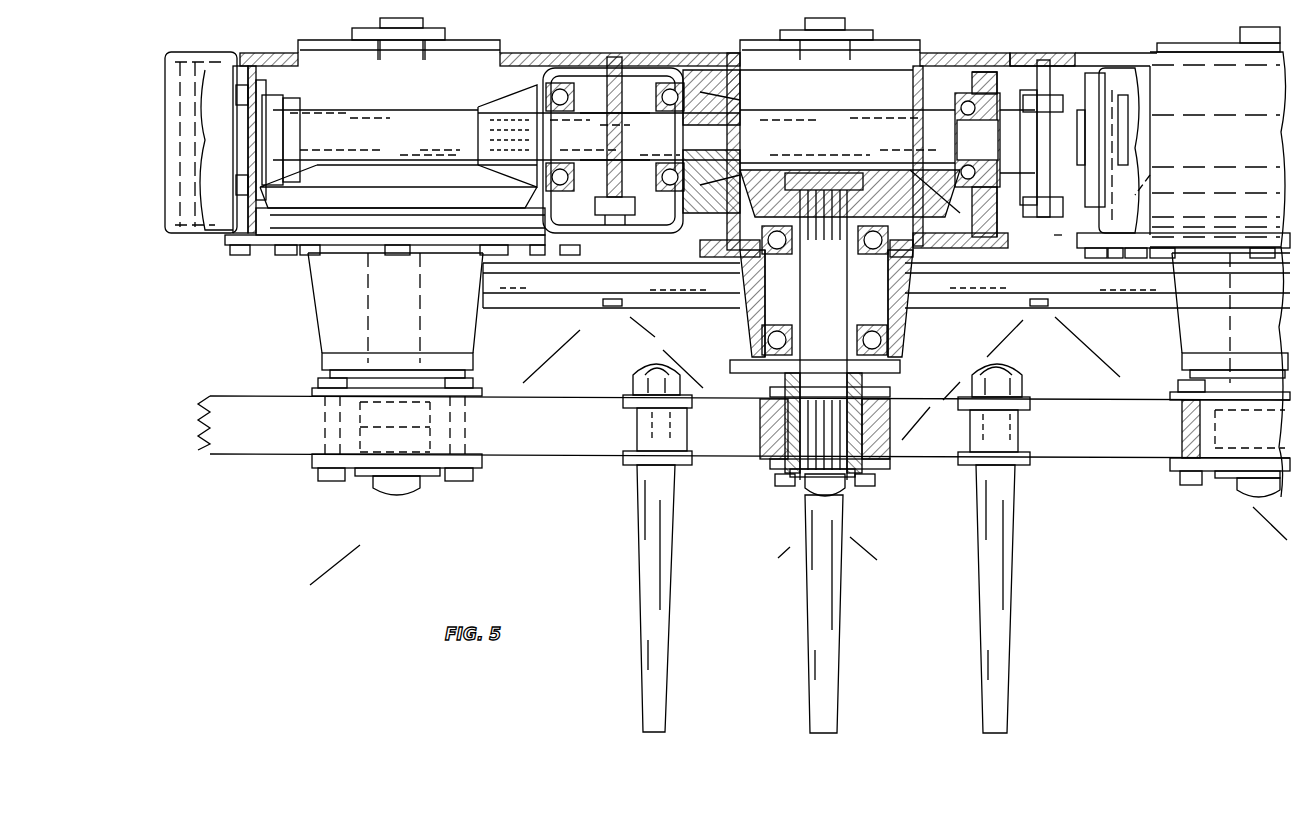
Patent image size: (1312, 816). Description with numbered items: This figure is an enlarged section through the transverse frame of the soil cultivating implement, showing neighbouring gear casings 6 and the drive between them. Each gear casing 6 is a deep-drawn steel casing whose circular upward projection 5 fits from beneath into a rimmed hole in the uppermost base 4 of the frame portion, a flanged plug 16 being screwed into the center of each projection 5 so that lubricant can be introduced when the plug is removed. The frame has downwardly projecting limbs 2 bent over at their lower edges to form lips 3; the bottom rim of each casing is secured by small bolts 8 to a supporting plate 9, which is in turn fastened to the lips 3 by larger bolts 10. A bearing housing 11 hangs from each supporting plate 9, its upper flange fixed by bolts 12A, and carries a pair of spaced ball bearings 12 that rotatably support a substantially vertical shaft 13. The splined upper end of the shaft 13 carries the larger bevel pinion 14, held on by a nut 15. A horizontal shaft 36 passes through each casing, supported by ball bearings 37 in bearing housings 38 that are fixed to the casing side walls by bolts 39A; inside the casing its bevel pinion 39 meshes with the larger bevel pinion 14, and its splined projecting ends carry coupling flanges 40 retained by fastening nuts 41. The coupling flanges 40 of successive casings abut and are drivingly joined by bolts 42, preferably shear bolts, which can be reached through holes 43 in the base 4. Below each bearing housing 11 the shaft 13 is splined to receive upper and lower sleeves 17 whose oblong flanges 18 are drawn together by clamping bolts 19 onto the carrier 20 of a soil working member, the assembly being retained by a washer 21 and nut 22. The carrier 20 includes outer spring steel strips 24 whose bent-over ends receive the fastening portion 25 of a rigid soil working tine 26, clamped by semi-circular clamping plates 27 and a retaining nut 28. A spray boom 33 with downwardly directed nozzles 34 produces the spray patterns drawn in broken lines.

The limbs 2 is at (1265, 88).
The lips 3 is at (1018, 235).
The uppermost base 4 is at (958, 52).
The upward projection 5 is at (454, 40).
The gear casing 6 is at (890, 96).
The small bolts 8 is at (236, 250).
The supporting plate 9 is at (347, 246).
The larger bolts 10 is at (1139, 262).
The bearing housing 11 is at (315, 300).
The ball bearings 12 is at (866, 312).
The bolts 12A is at (726, 274).
The shaft 13 is at (408, 412).
The bevel pinion 14 is at (326, 172).
The nut 15 is at (855, 172).
The flanged plug 16 is at (350, 26).
The sleeves 17 is at (312, 390).
The flanges 18 is at (482, 392).
The clamping bolts 19 is at (328, 482).
The carrier 20 is at (246, 460).
The retaining washer 21 is at (362, 478).
The nut 22 is at (406, 497).
The outer spring steel strips 24 is at (536, 454).
The fastening portion 25 is at (1005, 368).
The soil working tine 26 is at (642, 576).
The clamping plates 27 is at (622, 416).
The retaining nut 28 is at (630, 386).
The spray boom 33 is at (518, 300).
The spray nozzles 34 is at (612, 306).
The shaft 36 is at (370, 112).
The ball bearings 37 is at (694, 98).
The bearing housing 38 is at (247, 62).
The bevel pinion 39 is at (478, 104).
The bolts 39A is at (623, 153).
The coupling flange 40 is at (614, 57).
The fastening nuts 41 is at (622, 122).
The bolts 42 is at (610, 222).
The holes 43 is at (570, 51).